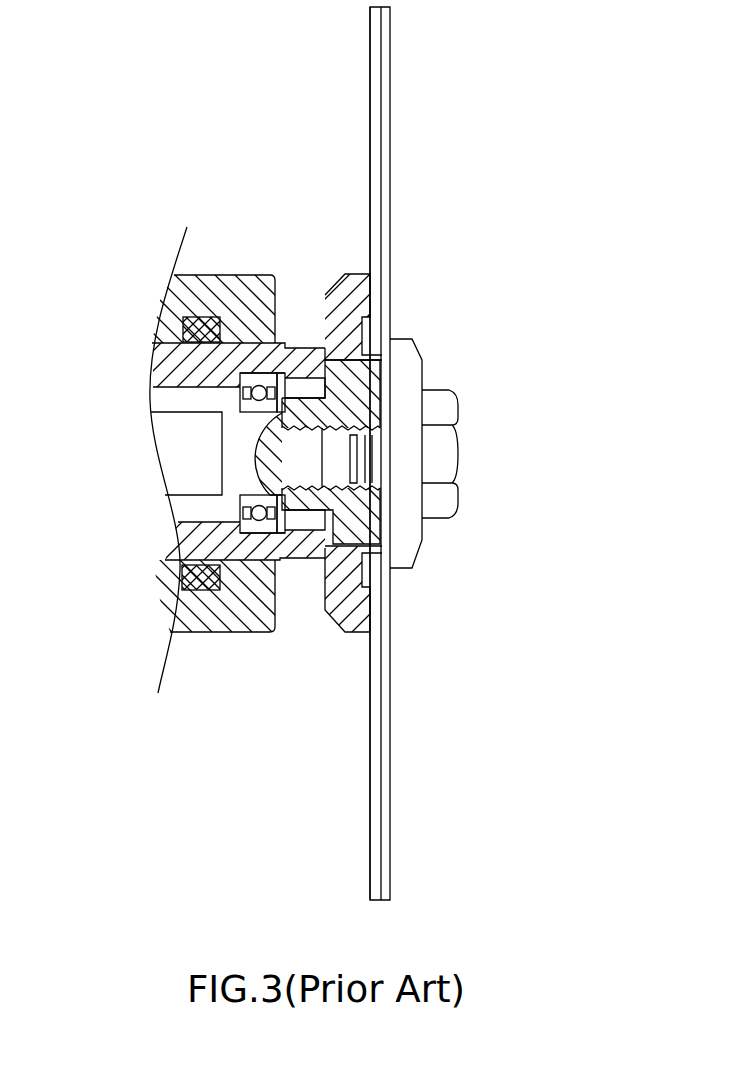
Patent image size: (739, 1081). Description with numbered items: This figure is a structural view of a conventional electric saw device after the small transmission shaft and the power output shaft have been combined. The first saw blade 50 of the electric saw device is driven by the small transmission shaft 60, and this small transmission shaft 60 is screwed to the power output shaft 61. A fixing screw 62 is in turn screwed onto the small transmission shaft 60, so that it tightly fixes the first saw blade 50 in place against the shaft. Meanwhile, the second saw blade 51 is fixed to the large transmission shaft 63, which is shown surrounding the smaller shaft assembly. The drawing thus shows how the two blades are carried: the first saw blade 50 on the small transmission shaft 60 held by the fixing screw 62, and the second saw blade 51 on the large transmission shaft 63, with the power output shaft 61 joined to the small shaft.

The first saw blade 50 is at (385, 157).
The second saw blade 51 is at (375, 108).
The small transmission shaft 60 is at (372, 520).
The power output shaft 61 is at (258, 452).
The fixing screw 62 is at (423, 453).
The large transmission shaft 63 is at (256, 350).